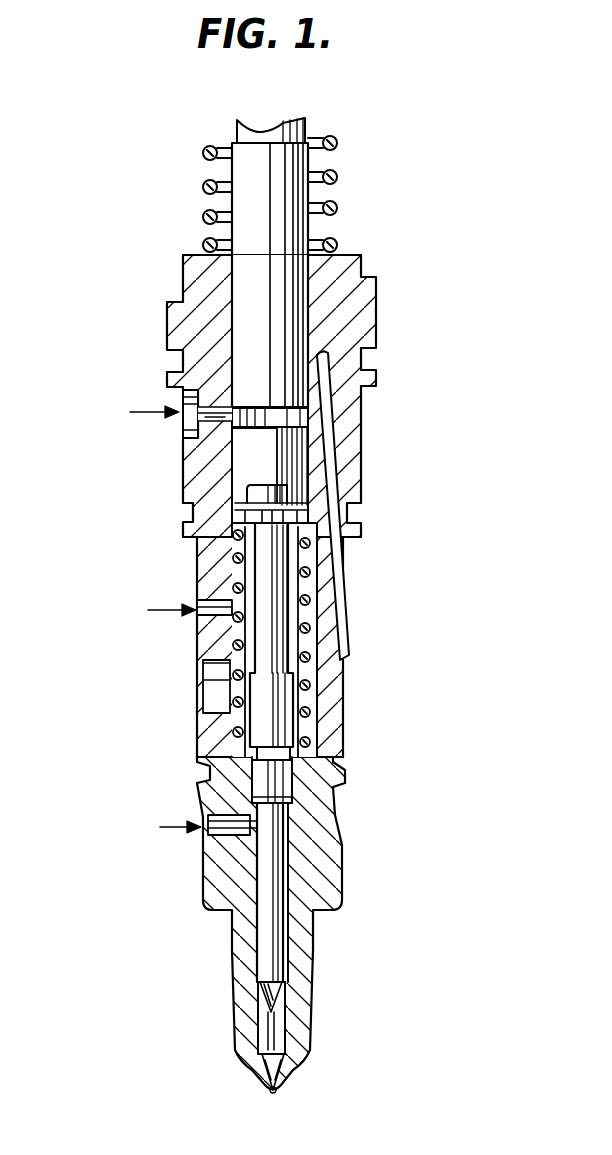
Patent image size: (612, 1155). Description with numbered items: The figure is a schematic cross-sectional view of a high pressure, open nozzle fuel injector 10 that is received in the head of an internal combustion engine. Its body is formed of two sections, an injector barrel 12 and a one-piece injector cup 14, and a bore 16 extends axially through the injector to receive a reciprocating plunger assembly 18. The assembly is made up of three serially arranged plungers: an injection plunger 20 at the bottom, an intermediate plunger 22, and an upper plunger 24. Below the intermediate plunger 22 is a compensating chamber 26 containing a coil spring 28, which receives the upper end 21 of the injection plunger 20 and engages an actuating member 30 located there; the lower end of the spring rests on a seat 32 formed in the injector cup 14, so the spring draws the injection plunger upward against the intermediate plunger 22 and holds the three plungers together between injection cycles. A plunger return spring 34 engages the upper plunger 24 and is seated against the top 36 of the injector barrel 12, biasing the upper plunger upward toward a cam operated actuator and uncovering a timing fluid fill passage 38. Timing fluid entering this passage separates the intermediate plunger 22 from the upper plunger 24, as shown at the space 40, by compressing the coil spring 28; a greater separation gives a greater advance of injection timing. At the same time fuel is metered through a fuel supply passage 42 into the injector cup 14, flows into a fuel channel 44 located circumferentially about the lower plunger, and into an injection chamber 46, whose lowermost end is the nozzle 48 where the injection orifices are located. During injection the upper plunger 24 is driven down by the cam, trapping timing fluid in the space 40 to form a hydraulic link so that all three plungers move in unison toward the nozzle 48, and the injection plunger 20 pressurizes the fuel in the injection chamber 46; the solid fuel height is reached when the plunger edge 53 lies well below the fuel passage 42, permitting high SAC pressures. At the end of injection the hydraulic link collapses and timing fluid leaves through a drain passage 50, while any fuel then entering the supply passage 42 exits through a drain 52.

The fuel injector 10 is at (110, 268).
The injector barrel 12 is at (372, 303).
The injector cup 14 is at (330, 887).
The bore 16 is at (342, 257).
The reciprocating plunger assembly 18 is at (250, 550).
The injection plunger 20 is at (265, 965).
The upper end of injection plunger 21 is at (275, 567).
The intermediate plunger 22 is at (270, 472).
The upper plunger 24 is at (197, 320).
The compensating chamber 26 is at (292, 610).
The coil spring 28 is at (303, 713).
The actuating member 30 is at (300, 512).
The seat 32 is at (333, 757).
The plunger return spring 34 is at (337, 178).
The top of injector barrel 36 is at (207, 245).
The timing fluid fill passage 38 is at (188, 423).
The space between upper and intermediate plungers 40 is at (298, 420).
The fuel supply passage 42 is at (213, 832).
The fuel channel 44 is at (300, 847).
The injection chamber 46 is at (277, 1028).
The nozzle 48 is at (277, 1092).
The drain passage 50 is at (323, 467).
The drain 52 is at (205, 617).
The plunger edge 53 is at (260, 802).